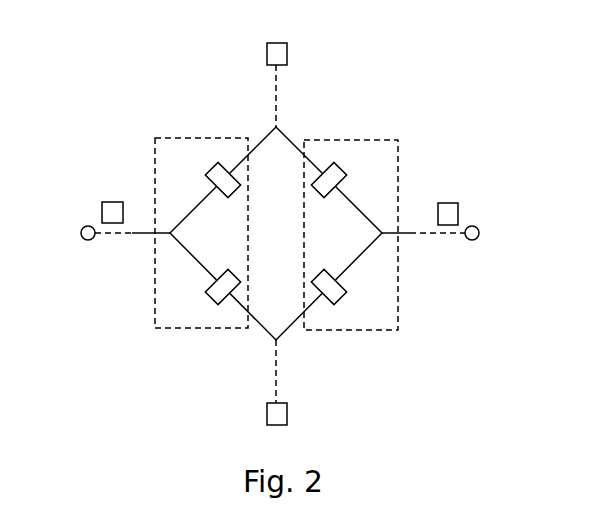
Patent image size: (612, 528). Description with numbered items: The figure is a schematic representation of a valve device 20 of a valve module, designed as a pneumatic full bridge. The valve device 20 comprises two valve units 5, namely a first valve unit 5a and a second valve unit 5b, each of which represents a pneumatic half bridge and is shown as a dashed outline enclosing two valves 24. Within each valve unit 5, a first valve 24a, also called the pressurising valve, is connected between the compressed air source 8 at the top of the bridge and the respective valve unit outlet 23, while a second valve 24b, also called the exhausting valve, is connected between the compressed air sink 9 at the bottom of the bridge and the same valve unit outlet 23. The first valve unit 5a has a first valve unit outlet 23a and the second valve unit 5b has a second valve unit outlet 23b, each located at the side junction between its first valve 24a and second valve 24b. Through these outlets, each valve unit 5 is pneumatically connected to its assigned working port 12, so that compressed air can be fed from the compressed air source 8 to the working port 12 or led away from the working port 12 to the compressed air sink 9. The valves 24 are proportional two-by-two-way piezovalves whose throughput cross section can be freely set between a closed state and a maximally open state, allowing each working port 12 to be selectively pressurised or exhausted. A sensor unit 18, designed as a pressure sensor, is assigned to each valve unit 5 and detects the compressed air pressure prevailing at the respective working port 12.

The valve device 20 is at (137, 114).
The valve unit 5 is at (276, 222).
The first valve unit 5a is at (201, 221).
The second valve unit 5b is at (350, 222).
The valve 24 is at (277, 234).
The first valve 24a is at (217, 171).
The second valve 24b is at (212, 292).
The compressed air source 8 is at (277, 53).
The compressed air sink 9 is at (280, 412).
The valve unit outlet 23 is at (276, 274).
The first valve unit outlet 23a is at (146, 244).
The second valve unit outlet 23b is at (407, 244).
The working port 12 is at (83, 227).
The sensor unit 18 is at (111, 208).